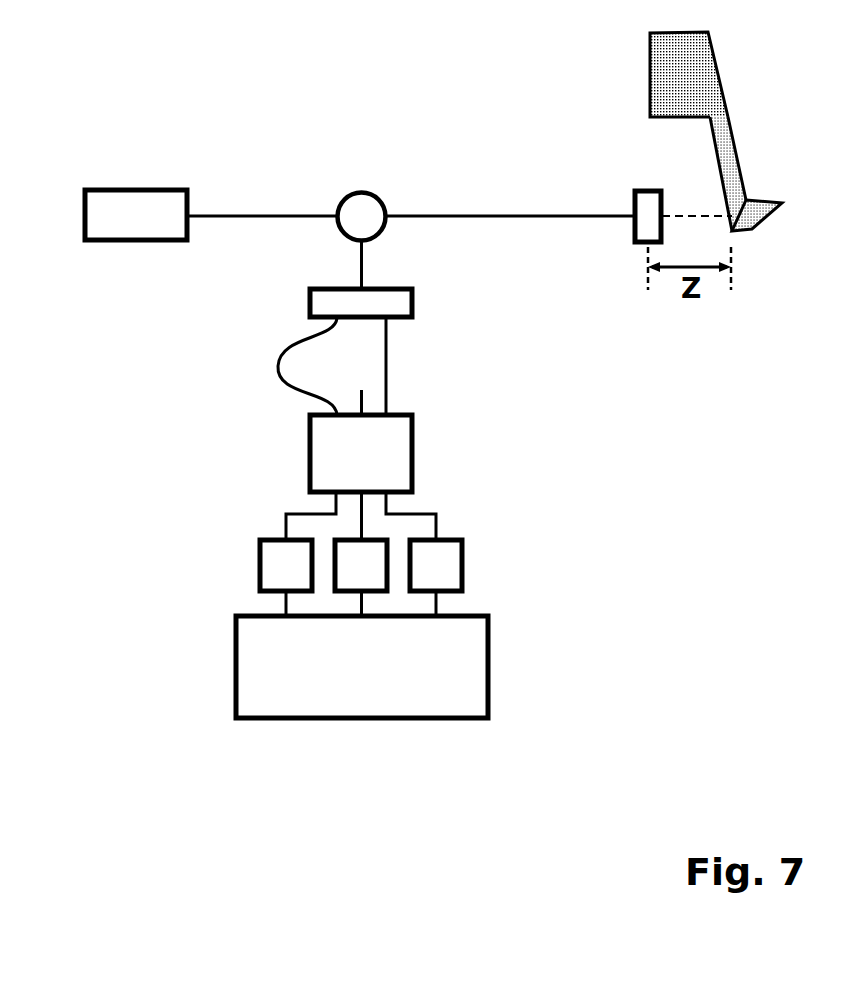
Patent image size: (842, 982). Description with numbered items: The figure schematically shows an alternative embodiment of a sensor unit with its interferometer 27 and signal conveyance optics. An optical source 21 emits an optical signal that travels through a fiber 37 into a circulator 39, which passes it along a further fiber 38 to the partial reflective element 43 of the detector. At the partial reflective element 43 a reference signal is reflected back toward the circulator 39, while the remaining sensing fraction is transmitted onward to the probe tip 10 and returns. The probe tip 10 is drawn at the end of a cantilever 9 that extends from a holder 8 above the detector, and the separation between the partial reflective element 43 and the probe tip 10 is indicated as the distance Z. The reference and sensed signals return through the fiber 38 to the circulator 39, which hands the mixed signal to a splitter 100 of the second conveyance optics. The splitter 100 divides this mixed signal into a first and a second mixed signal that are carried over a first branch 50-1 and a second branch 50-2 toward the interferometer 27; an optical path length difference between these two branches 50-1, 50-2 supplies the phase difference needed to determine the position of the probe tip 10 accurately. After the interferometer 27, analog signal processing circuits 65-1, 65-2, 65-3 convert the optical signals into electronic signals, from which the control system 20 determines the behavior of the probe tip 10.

The optical source 21 is at (137, 188).
The fiber 37 is at (270, 215).
The circulator 39 is at (362, 190).
The fiber 38 is at (462, 215).
The cantilever holder 8 is at (732, 125).
The cantilever 9 is at (740, 150).
The probe tip 10 is at (763, 205).
The partial reflective element 43 is at (631, 242).
The splitter 100 is at (412, 298).
The first branch 50-1 is at (274, 368).
The second branch 50-2 is at (387, 365).
The interferometer 27 is at (412, 450).
The analog signal processing circuit 65-1 is at (258, 562).
The analog signal processing circuit 65-2 is at (388, 552).
The analog signal processing circuit 65-3 is at (462, 560).
The control system 20 is at (357, 718).